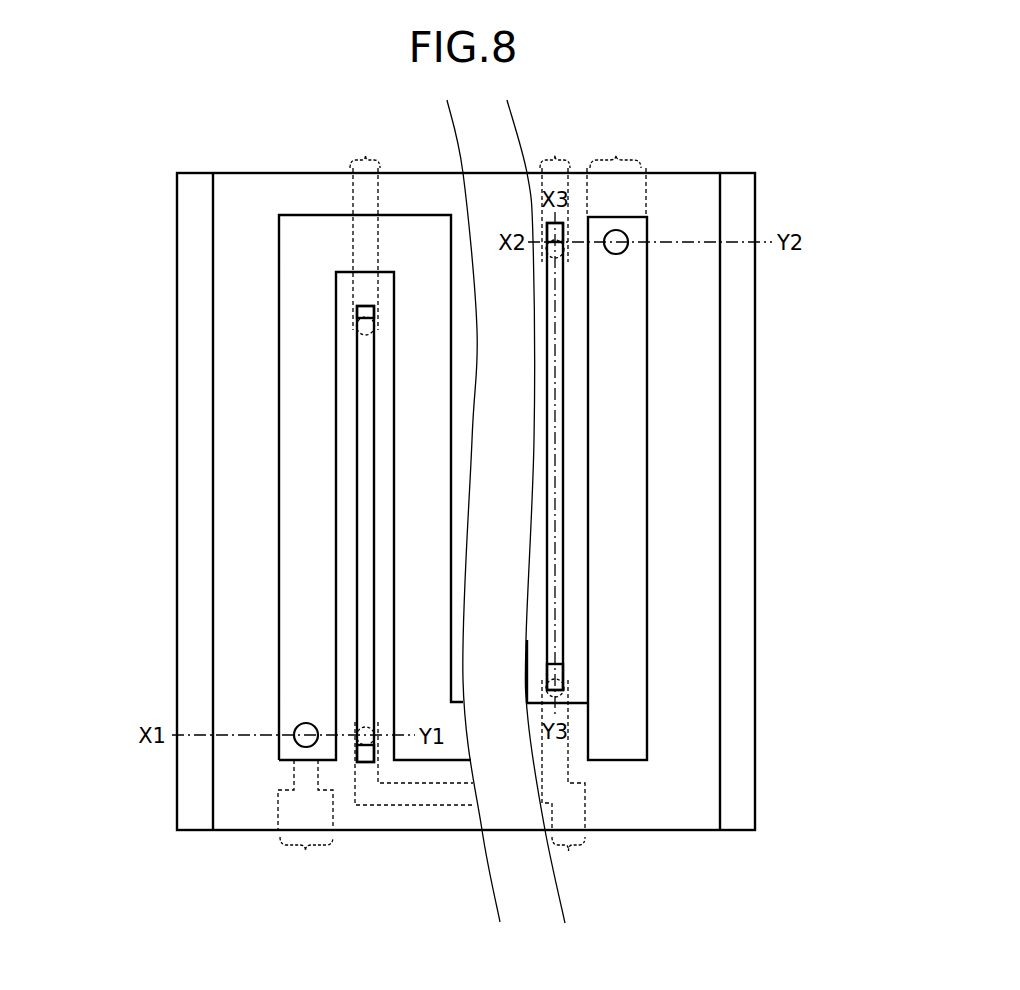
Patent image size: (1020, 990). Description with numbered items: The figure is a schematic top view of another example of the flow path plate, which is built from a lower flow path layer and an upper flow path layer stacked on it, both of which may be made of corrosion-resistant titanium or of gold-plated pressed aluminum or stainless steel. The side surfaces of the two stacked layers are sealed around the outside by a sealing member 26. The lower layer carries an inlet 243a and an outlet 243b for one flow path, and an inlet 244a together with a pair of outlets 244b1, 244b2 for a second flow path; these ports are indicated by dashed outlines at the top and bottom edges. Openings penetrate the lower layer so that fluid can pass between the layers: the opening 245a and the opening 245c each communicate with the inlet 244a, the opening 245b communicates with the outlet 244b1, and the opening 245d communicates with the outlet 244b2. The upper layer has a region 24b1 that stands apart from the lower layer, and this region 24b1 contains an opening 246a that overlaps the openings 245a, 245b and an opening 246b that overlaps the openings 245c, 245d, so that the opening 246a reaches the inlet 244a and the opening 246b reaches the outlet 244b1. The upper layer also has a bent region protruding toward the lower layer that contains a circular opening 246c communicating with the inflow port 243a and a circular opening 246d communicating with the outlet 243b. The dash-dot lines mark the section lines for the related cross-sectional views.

The sealing member 26 is at (177, 620).
The region 24b1 is at (278, 577).
The inlet 243a is at (309, 824).
The outlet 243b is at (587, 443).
The inlet 244a is at (574, 777).
The outlet 244b1 is at (368, 228).
The outlet 244b2 is at (556, 194).
The opening 245a is at (366, 752).
The opening 245b is at (352, 320).
The opening 245c is at (567, 673).
The opening 245d is at (563, 252).
The opening 246a is at (352, 462).
The opening 246b is at (563, 517).
The opening 246c is at (296, 730).
The opening 246d is at (630, 242).